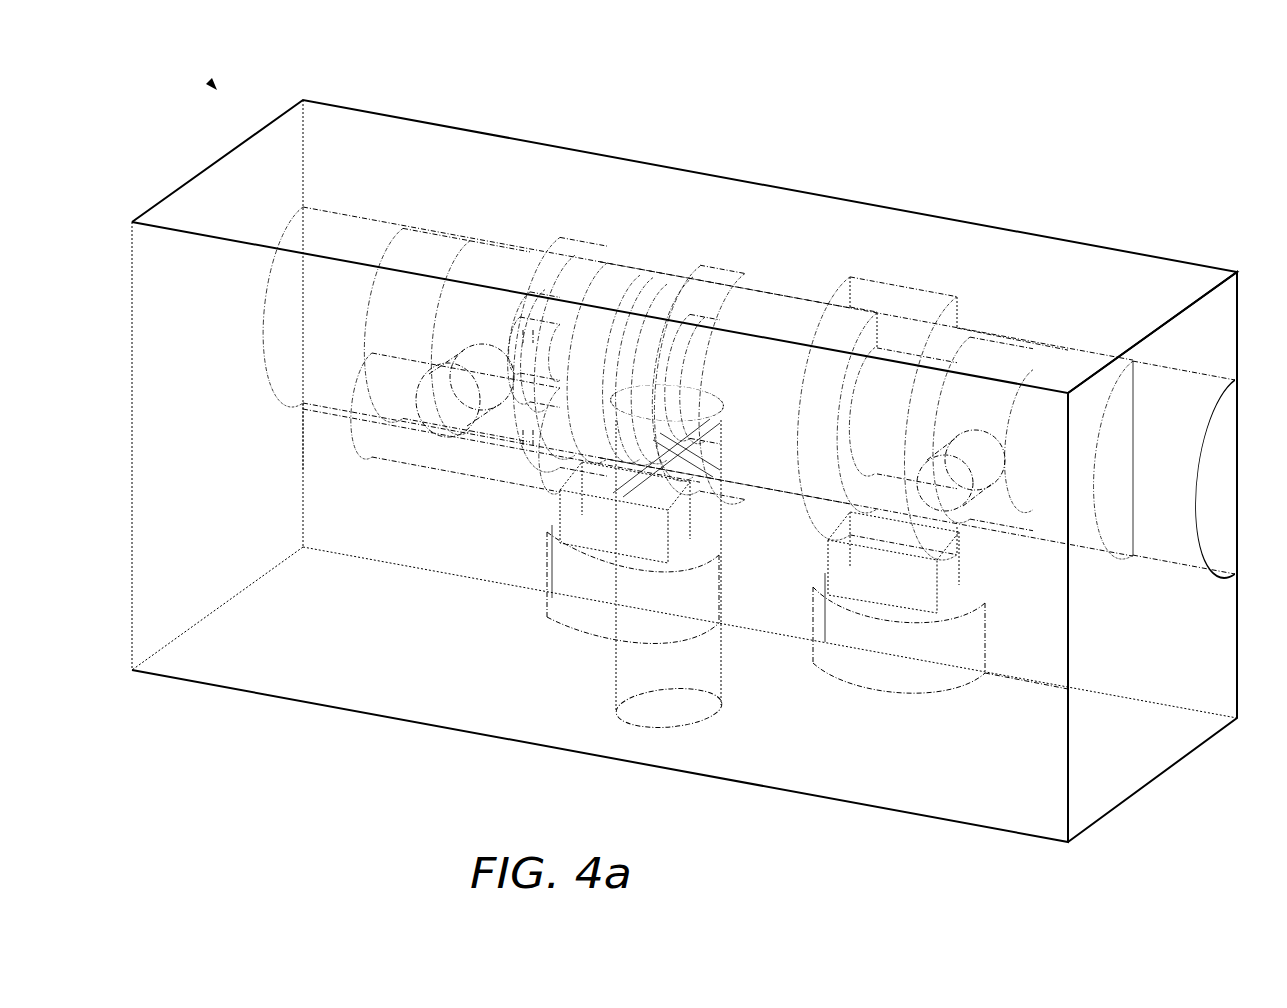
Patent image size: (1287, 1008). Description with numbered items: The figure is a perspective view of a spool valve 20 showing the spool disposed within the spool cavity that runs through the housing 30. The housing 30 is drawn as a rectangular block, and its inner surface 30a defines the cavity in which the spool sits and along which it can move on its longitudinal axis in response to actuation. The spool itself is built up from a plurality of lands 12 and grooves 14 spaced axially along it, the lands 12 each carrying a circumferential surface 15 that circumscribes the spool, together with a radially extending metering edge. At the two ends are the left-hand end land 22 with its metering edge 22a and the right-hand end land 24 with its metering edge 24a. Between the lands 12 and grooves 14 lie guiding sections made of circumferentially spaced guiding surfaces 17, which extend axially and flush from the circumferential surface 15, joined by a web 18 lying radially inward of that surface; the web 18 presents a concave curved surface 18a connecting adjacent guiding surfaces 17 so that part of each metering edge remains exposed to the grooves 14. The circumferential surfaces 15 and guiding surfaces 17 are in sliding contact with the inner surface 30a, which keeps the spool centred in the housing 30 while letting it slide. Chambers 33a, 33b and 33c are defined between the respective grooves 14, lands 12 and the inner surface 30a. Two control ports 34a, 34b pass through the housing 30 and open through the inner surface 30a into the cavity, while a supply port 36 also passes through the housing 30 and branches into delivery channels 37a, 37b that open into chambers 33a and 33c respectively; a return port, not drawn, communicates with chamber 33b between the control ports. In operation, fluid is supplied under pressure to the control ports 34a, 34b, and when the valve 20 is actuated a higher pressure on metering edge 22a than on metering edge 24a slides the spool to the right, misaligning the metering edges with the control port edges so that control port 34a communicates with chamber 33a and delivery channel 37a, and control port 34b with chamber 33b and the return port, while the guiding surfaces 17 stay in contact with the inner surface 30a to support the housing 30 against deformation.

The spool valve 20 is at (210, 84).
The spool housing 30 is at (147, 634).
The inner surface 30a is at (255, 308).
The right-hand end land 24 is at (1090, 360).
The metering edge 24a is at (1115, 465).
The metering edge 22a is at (392, 243).
The left-hand end land 22 is at (432, 243).
The grooves 14 is at (505, 300).
The guiding surfaces 17 is at (568, 263).
The circumferential surface 15 is at (596, 275).
The web 18 is at (668, 357).
The curved surface 18a is at (683, 313).
The lands 12 is at (553, 435).
The chamber 33a is at (500, 427).
The delivery channel 37a is at (443, 417).
The chamber 33b is at (735, 470).
The chamber 33c is at (1012, 350).
The delivery channel 37b is at (980, 483).
The control port 34a is at (590, 622).
The supply port 36 is at (667, 717).
The control port 34b is at (892, 676).